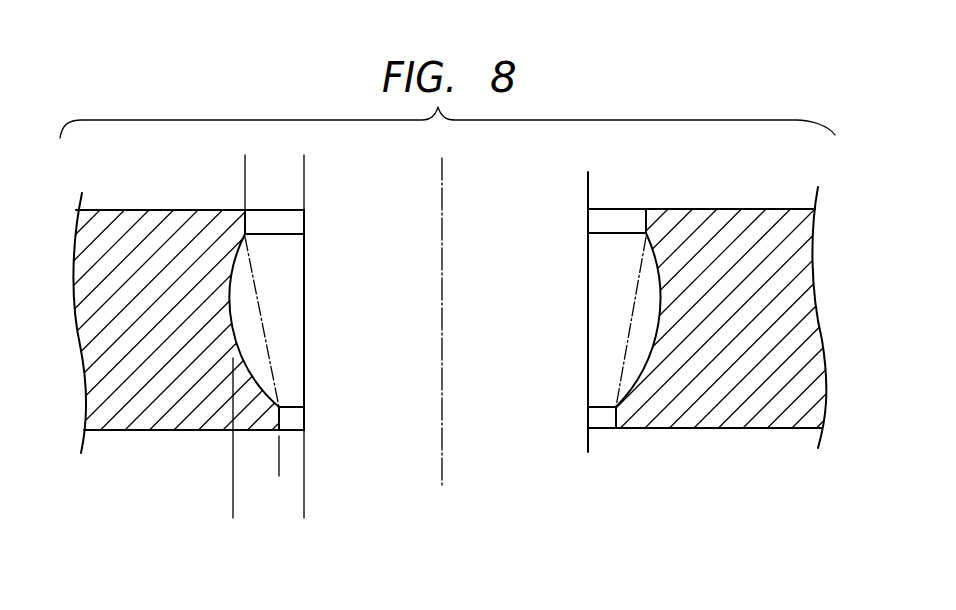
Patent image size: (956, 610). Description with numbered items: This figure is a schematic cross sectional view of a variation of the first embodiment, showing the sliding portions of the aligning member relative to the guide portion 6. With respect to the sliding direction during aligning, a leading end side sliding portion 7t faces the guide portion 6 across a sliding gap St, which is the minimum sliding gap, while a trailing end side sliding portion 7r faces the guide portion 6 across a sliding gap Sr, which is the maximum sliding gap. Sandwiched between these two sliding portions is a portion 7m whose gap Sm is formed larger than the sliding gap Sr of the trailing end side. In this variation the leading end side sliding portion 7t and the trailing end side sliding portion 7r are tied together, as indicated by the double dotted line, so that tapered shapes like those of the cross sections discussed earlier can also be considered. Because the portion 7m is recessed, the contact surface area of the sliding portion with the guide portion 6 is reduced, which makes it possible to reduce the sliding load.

The guide portion 6 is at (588, 272).
The trailing end side sliding portion 7r is at (645, 221).
The portion sandwiched between the sliding portions 7m is at (658, 327).
The leading end side sliding portion 7t is at (610, 428).
The sliding gap of the trailing end side Sr is at (245, 163).
The gap of the sandwiched portion Sm is at (233, 508).
The sliding gap of the leading end side St is at (240, 465).